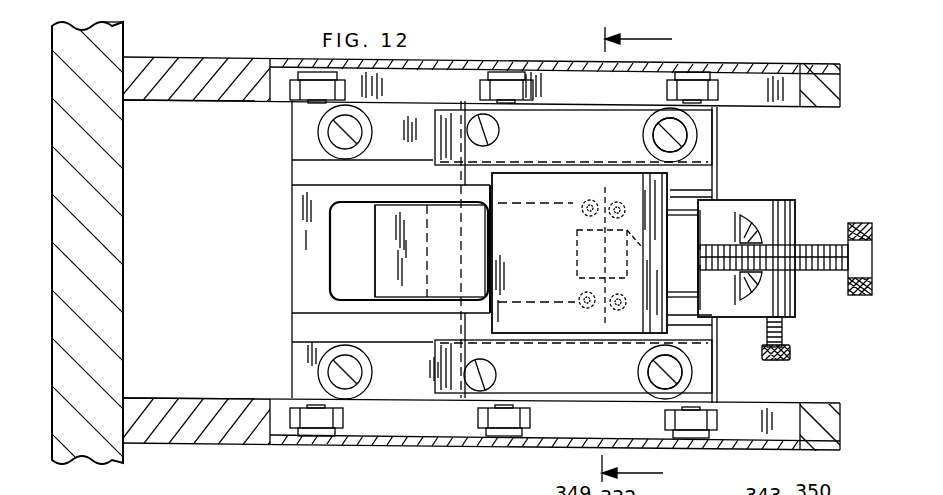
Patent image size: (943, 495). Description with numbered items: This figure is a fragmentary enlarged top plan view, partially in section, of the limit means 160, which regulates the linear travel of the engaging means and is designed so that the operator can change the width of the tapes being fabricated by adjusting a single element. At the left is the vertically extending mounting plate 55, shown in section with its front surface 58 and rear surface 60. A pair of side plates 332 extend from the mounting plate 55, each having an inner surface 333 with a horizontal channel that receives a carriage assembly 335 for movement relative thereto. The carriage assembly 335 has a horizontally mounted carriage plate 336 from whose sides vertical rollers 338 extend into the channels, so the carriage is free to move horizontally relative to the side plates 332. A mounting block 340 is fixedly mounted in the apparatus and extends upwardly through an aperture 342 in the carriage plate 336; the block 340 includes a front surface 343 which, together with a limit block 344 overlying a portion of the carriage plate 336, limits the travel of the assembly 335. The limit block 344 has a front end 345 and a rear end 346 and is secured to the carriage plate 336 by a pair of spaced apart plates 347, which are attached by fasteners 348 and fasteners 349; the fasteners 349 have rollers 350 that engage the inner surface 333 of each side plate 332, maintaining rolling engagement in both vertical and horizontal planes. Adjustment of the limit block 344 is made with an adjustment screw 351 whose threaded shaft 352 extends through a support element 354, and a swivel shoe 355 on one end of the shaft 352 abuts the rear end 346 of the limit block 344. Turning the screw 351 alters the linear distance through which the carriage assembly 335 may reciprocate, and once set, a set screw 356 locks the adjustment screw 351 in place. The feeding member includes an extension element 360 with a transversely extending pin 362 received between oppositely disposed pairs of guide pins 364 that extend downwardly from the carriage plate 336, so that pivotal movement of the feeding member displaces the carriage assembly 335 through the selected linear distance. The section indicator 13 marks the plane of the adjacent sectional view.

The section line 13- 13 is at (654, 258).
The mounting plate 55 is at (116, 46).
The front surface 58 is at (52, 226).
The rear surface 60 is at (127, 192).
The limit means 160 is at (826, 242).
The side plates 332 is at (205, 57).
The inner surface 333 is at (188, 100).
The carriage assembly 335 is at (720, 165).
The carriage plate 336 is at (292, 338).
The vertical rollers 338 is at (292, 96).
The mounting block 340 is at (385, 242).
The aperture 342 is at (330, 259).
The front surface 343 is at (488, 276).
The limit block 344 is at (528, 334).
The front end 345 is at (490, 322).
The rear end 346 is at (668, 323).
The spaced apart plates 347 is at (708, 145).
The fasteners 348 is at (499, 126).
The fasteners 349 is at (684, 130).
The rollers 350 is at (318, 137).
The adjustment screw 351 is at (862, 296).
The threaded shaft 352 is at (830, 268).
The support element 354 is at (776, 204).
The swivel shoe 355 is at (690, 214).
The set screw 356 is at (784, 360).
The extension element 360 is at (577, 254).
The pin 362 is at (575, 338).
The guide pins 364 is at (581, 212).